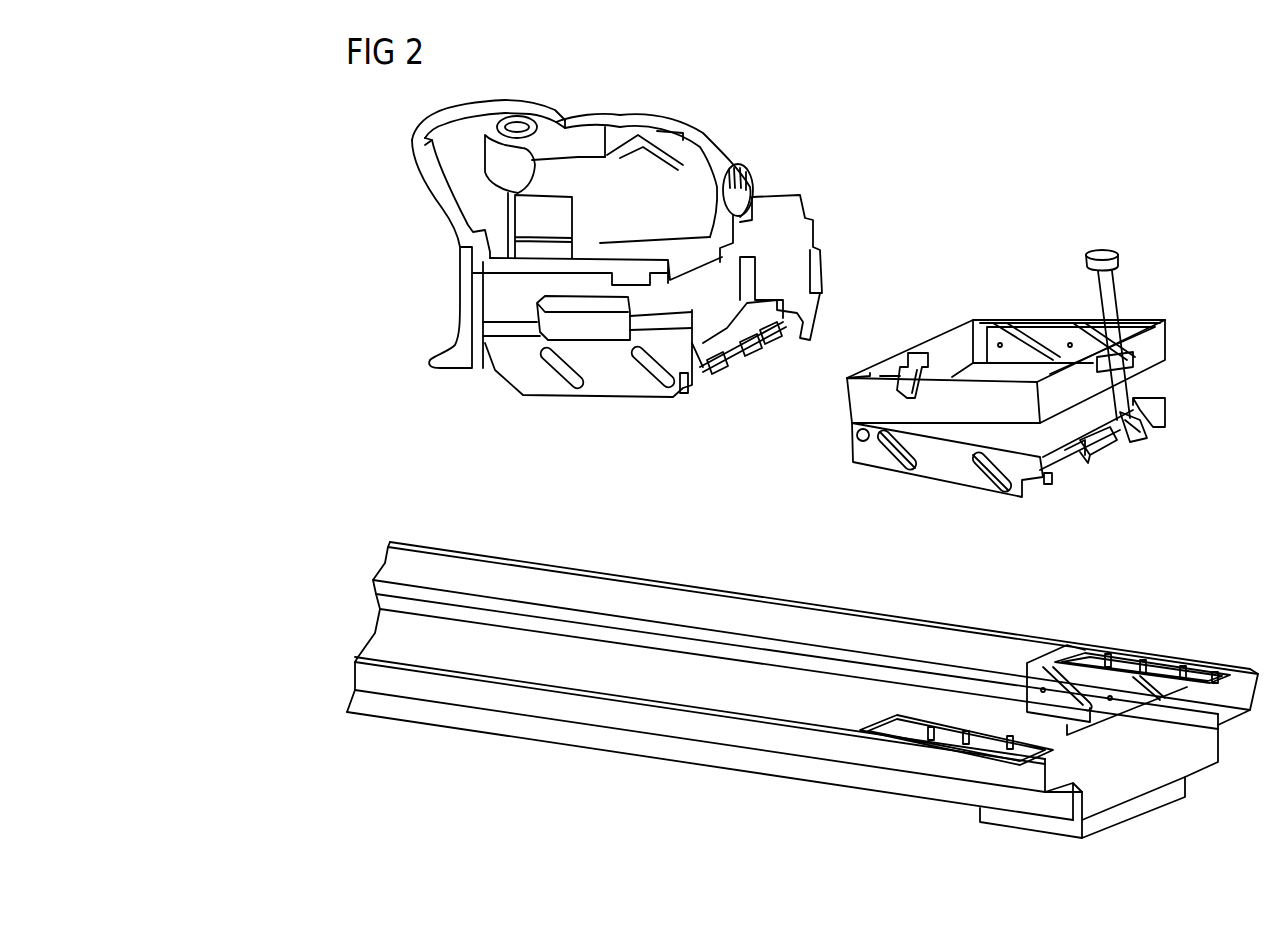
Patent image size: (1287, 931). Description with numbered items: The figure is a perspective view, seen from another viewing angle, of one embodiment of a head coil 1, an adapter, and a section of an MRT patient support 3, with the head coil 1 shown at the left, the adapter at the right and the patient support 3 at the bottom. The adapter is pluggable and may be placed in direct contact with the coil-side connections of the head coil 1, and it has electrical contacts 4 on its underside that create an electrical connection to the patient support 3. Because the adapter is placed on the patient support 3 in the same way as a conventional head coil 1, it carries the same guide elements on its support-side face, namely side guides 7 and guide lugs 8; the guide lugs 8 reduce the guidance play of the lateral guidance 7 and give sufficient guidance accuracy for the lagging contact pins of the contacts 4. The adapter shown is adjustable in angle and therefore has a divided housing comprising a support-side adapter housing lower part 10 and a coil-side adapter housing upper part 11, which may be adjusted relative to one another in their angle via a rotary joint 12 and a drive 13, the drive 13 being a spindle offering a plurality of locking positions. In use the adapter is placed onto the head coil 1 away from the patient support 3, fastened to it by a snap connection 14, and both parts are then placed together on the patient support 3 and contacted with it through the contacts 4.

The head coil 1 is at (710, 167).
The patient support 3 is at (738, 673).
The electrical contacts 4 is at (1108, 460).
The side guides 7 is at (997, 478).
The guide lugs 8 is at (1048, 484).
The adapter housing lower part 10 is at (1162, 415).
The adapter housing upper part 11 is at (860, 403).
The rotary joint 12 is at (857, 440).
The drive 13 is at (1127, 358).
The snap connection 14 is at (916, 352).